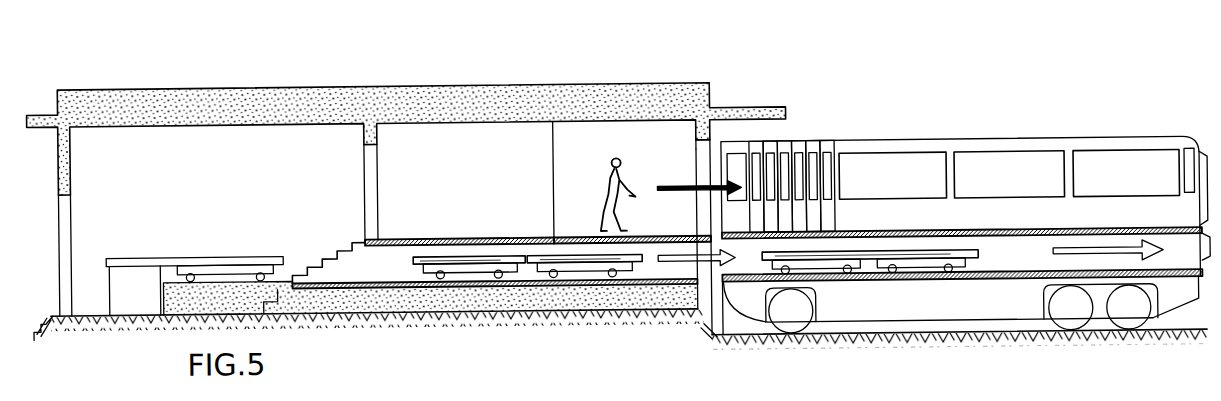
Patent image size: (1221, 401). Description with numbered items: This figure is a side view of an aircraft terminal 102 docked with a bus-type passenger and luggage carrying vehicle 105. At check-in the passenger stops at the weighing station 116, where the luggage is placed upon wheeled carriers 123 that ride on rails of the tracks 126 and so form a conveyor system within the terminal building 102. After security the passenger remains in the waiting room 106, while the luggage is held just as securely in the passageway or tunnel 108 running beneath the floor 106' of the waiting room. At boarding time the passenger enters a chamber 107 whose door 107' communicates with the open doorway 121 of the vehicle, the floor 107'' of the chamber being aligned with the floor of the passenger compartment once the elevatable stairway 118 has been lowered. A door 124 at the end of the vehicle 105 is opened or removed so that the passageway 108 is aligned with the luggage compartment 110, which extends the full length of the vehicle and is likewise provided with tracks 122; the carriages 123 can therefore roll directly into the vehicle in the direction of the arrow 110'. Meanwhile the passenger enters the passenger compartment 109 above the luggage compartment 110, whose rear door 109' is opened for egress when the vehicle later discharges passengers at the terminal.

The aircraft terminal 102 is at (222, 86).
The bus-type vehicle 105 is at (880, 138).
The waiting room 106 is at (512, 145).
The floor of the waiting room 106' is at (460, 222).
The chamber 107 is at (640, 177).
The door of the chamber 107' is at (692, 173).
The floor of boarding room 107'' is at (632, 222).
The passageway or tunnel 108 is at (383, 258).
The passenger compartment 109 is at (1008, 139).
The rear door 109' is at (1170, 185).
The luggage compartment 110 is at (940, 321).
The arrow 110' is at (1109, 312).
The weighing station 116 is at (137, 273).
The elevatable stairway 118 is at (806, 139).
The open doorway 121 is at (718, 161).
The tracks 122 is at (908, 286).
The wheeled carriers 123 is at (227, 266).
The door 124 is at (1198, 260).
The tracks 126 is at (573, 284).